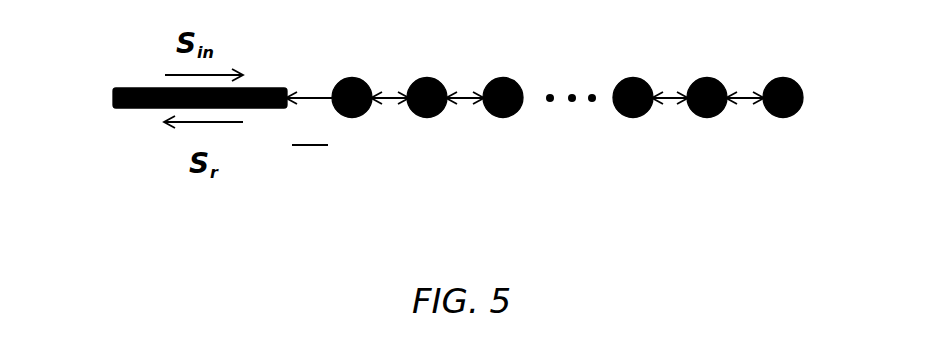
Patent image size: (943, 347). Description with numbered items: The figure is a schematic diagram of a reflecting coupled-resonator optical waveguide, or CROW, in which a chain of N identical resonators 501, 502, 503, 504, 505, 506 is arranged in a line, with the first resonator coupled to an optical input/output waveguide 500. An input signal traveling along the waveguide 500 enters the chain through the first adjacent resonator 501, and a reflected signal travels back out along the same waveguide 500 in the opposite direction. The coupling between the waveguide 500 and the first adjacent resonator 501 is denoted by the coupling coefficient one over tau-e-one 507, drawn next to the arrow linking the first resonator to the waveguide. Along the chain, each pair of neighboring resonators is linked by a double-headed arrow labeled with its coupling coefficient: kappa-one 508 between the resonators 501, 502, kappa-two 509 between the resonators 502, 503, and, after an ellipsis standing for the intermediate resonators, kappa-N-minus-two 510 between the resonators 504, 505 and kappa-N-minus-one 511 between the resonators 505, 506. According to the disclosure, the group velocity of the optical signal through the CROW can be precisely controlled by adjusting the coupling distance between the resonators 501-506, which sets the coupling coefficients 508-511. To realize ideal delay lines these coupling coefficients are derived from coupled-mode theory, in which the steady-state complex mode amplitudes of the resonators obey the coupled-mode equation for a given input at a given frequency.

The waveguide 500 is at (127, 90).
The first adjacent resonator 501 is at (352, 86).
The resonator 502 is at (427, 86).
The resonator 503 is at (503, 86).
The resonator 504 is at (633, 86).
The resonator 505 is at (707, 86).
The resonator 506 is at (783, 86).
The waveguide-resonator coupling rate 1/tau_e1 507 is at (309, 154).
The coupling coefficient κ1 508 is at (390, 134).
The coupling coefficient κ2 509 is at (467, 134).
The coupling coefficient κN-2 510 is at (663, 134).
The coupling coefficient κN-1 511 is at (749, 134).